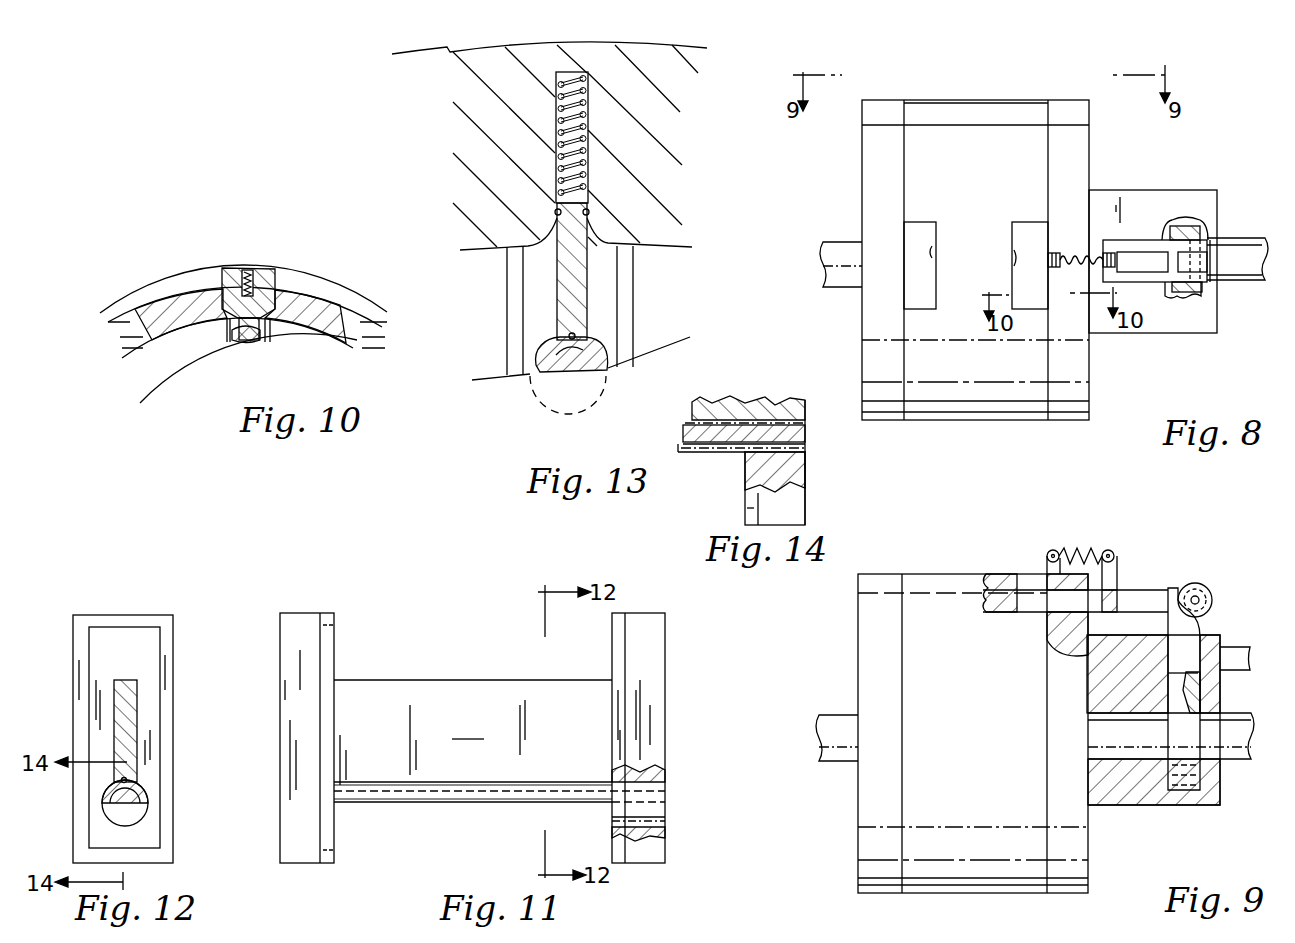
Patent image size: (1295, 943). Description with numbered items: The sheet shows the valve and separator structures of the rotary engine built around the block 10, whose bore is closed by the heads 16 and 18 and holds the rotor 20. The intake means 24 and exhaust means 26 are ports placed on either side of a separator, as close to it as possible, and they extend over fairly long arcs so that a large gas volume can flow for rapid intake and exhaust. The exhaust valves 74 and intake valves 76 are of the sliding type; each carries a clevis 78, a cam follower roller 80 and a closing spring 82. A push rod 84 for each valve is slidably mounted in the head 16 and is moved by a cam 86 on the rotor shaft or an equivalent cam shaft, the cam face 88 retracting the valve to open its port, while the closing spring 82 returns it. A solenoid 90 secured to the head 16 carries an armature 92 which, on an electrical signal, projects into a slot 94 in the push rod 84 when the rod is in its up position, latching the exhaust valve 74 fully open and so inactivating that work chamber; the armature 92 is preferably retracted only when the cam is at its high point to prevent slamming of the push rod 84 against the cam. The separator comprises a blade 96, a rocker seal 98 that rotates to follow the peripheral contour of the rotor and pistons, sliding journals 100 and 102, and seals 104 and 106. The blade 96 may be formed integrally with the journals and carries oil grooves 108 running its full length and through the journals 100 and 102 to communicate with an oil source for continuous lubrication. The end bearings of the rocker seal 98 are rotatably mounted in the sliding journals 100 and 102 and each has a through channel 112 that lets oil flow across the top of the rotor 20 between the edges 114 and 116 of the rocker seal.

In FIG. 8, the block 10 is at (940, 100).
In FIG. 13, the block 10 is at (536, 143).
In FIG. 8, the head 16 is at (1091, 110).
In FIG. 9, the head 16 is at (1105, 805).
In FIG. 10, the head 16 is at (105, 312).
In FIG. 8, the head 18 is at (882, 101).
In FIG. 9, the head 18 is at (886, 575).
In FIG. 10, the rotor 20 is at (143, 397).
In FIG. 13, the rotor 20 is at (478, 379).
In FIG. 8, the intake means 24 is at (1014, 262).
In FIG. 10, the intake means 24 is at (135, 309).
In FIG. 10, the exhaust means 26 is at (267, 288).
In FIG. 8, the exhaust valve 74 is at (1031, 228).
In FIG. 9, the exhaust valve 74 is at (1023, 592).
In FIG. 10, the exhaust valve 74 is at (176, 297).
In FIG. 10, the intake valve 76 is at (327, 303).
In FIG. 8, the clevis 78 is at (1125, 279).
In FIG. 8, the cam follower roller 80 is at (1210, 280).
In FIG. 9, the cam follower roller 80 is at (1210, 585).
In FIG. 8, the closing spring 82 is at (1088, 255).
In FIG. 9, the closing spring 82 is at (1083, 556).
In FIG. 9, the push rod 84 is at (1183, 660).
In FIG. 8, the cam 86 is at (1188, 217).
In FIG. 9, the cam 86 is at (1205, 795).
In FIG. 9, the cam face 88 is at (1205, 632).
In FIG. 8, the solenoid 90 is at (1238, 255).
In FIG. 9, the solenoid 90 is at (1255, 660).
In FIG. 9, the armature 92 is at (1225, 648).
In FIG. 9, the slot 94 is at (1210, 712).
In FIG. 13, the blade 96 is at (557, 298).
In FIG. 14, the blade 96 is at (736, 402).
In FIG. 11, the blade 96 is at (473, 727).
In FIG. 12, the blade 96 is at (135, 765).
In FIG. 13, the rocker seal 98 is at (540, 350).
In FIG. 14, the rocker seal 98 is at (685, 432).
In FIG. 11, the rocker seal 98 is at (345, 781).
In FIG. 12, the rocker seal 98 is at (150, 795).
In FIG. 11, the sliding journal 100 is at (280, 695).
In FIG. 13, the sliding journal 102 is at (603, 295).
In FIG. 14, the sliding journal 102 is at (807, 512).
In FIG. 11, the sliding journal 102 is at (667, 665).
In FIG. 12, the sliding journal 102 is at (175, 655).
In FIG. 11, the seal 104 is at (336, 652).
In FIG. 13, the seal 106 is at (625, 323).
In FIG. 11, the seal 106 is at (612, 655).
In FIG. 13, the oil groove 108 is at (556, 210).
In FIG. 14, the oil groove 108 is at (806, 421).
In FIG. 13, the through channel 112 is at (580, 372).
In FIG. 14, the through channel 112 is at (807, 442).
In FIG. 13, the edge 114 is at (550, 397).
In FIG. 14, the edge 114 is at (702, 455).
In FIG. 13, the edge 116 is at (608, 377).